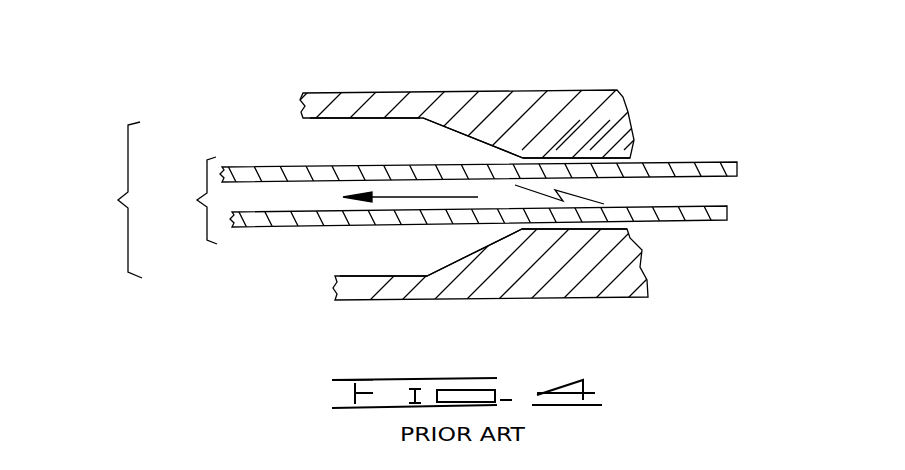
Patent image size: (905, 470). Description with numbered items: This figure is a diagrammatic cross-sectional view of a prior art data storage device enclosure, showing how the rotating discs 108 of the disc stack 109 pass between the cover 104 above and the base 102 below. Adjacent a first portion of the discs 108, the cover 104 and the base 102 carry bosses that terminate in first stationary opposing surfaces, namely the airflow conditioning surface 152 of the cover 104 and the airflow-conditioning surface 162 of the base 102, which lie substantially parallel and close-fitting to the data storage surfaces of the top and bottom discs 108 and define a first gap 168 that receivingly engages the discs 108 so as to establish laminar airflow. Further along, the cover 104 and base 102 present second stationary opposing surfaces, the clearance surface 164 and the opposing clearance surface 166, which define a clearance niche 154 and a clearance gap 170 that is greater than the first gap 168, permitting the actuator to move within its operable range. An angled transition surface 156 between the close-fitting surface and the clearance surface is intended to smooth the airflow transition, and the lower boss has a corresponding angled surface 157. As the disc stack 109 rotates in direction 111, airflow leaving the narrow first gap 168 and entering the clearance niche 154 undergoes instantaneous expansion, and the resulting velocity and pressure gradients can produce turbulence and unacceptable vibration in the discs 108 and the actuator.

The base 102 is at (548, 298).
The cover 104 is at (500, 90).
The disc 108 is at (740, 166).
The disc stack 109 is at (740, 145).
The direction 111 is at (412, 196).
The airflow conditioning surface 152 is at (612, 162).
The clearance niche 154 is at (300, 149).
The angled transition surface 156 is at (465, 137).
The inclined surface of lower block 157 is at (467, 271).
The airflow-conditioning surface 162 is at (603, 223).
The clearance surface 164 is at (330, 120).
The clearance surface 166 is at (360, 276).
The first gap 168 is at (197, 200).
The clearance gap 170 is at (118, 200).